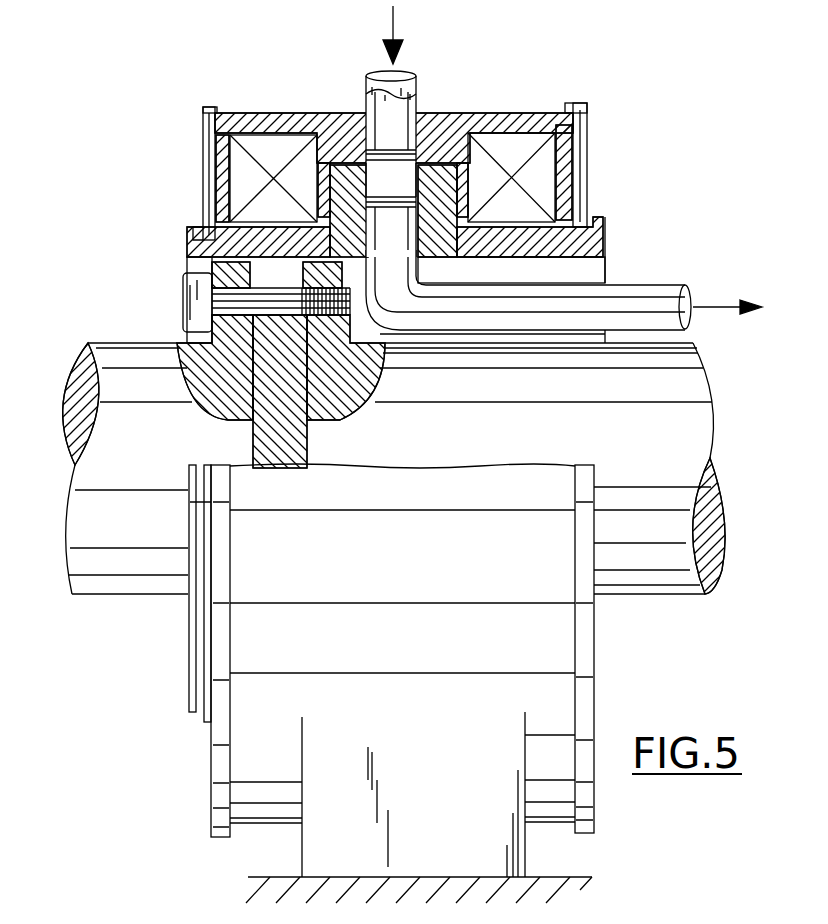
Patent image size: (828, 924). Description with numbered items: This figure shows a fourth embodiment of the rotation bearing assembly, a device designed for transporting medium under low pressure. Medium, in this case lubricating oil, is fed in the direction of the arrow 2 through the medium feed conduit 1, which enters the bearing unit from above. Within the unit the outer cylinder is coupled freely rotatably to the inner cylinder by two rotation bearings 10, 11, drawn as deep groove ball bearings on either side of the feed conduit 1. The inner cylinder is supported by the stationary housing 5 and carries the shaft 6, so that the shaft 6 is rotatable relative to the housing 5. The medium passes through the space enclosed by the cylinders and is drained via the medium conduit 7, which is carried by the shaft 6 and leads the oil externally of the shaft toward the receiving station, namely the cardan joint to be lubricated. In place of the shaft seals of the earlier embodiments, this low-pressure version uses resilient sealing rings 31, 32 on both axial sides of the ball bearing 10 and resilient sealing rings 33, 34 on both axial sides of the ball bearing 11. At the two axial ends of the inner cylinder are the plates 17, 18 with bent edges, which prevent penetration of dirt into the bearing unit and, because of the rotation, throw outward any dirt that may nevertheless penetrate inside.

The medium feed conduit 1 is at (407, 94).
The arrow 2 is at (402, 28).
The housing 5 is at (558, 652).
The shaft 6 is at (680, 427).
The medium conduit 7 is at (643, 305).
The rotation bearing 10 is at (268, 150).
The rotation bearing 11 is at (518, 147).
The plate 17 is at (203, 147).
The plate 18 is at (588, 143).
The resilient sealing ring 31 is at (216, 178).
The resilient sealing ring 32 is at (323, 153).
The resilient sealing ring 33 is at (580, 187).
The resilient sealing ring 34 is at (458, 185).